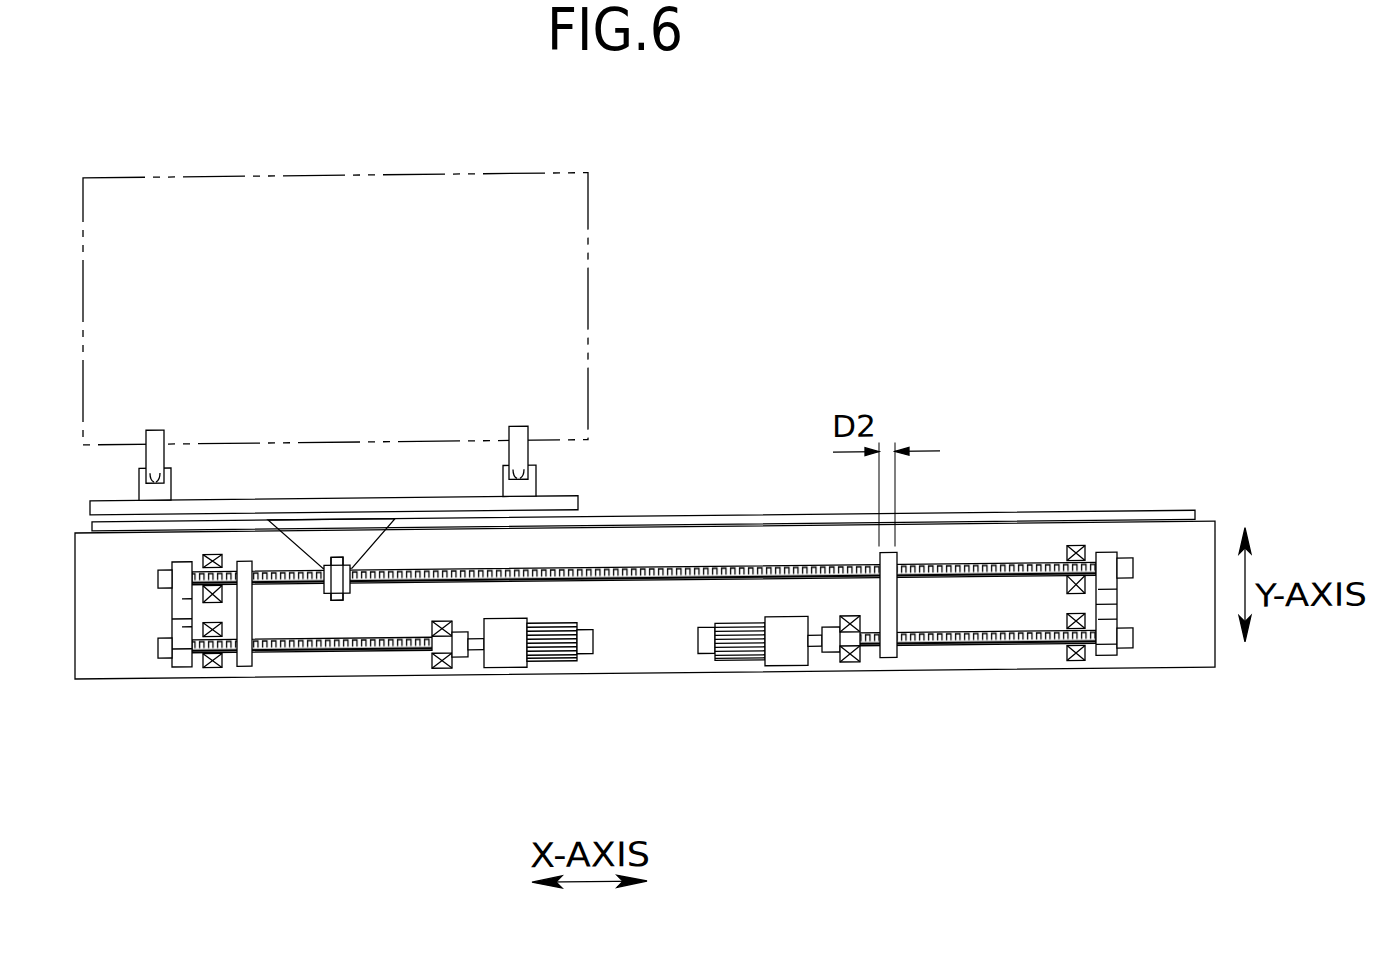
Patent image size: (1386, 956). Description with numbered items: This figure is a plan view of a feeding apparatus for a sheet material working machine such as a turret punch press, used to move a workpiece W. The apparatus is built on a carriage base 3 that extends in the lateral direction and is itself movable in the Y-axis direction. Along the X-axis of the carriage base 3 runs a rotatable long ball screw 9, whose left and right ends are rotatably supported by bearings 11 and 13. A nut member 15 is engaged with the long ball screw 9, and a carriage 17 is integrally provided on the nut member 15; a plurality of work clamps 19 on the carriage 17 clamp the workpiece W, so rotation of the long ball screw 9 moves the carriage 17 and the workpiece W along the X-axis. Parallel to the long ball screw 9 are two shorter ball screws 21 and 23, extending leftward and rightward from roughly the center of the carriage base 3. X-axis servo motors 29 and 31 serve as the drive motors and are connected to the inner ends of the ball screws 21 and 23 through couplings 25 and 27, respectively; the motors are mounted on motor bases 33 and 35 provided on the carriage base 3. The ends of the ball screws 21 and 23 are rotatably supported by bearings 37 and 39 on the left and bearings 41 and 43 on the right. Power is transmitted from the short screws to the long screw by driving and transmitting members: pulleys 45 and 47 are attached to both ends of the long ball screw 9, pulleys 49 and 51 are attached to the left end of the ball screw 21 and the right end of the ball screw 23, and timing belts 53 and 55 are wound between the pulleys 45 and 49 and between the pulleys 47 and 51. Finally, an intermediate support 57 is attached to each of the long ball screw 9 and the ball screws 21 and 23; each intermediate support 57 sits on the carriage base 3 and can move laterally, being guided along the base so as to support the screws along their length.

The carriage base 3 is at (120, 671).
The long ball screw 9 is at (672, 572).
The bearing 11 is at (207, 556).
The bearing 13 is at (1073, 556).
The nut member 15 is at (352, 560).
The carriage 17 is at (345, 537).
The work clamp 19 is at (145, 456).
The ball screw 21 is at (366, 663).
The ball screw 23 is at (972, 669).
The coupling 25 is at (470, 672).
The coupling 27 is at (828, 668).
The X-axis servo motor 29 is at (553, 668).
The X-axis servo motor 31 is at (742, 667).
The motor base 33 is at (507, 672).
The motor base 35 is at (790, 667).
The bearing 37 is at (212, 669).
The bearing 39 is at (445, 672).
The bearing 41 is at (852, 673).
The bearing 43 is at (1075, 675).
The pulley 45 is at (182, 594).
The pulley 47 is at (1108, 562).
The pulley 49 is at (183, 667).
The pulley 51 is at (1108, 676).
The timing belt 53 is at (172, 621).
The timing belt 55 is at (1112, 609).
The intermediate support 57 is at (244, 672).
The workpiece W is at (590, 263).